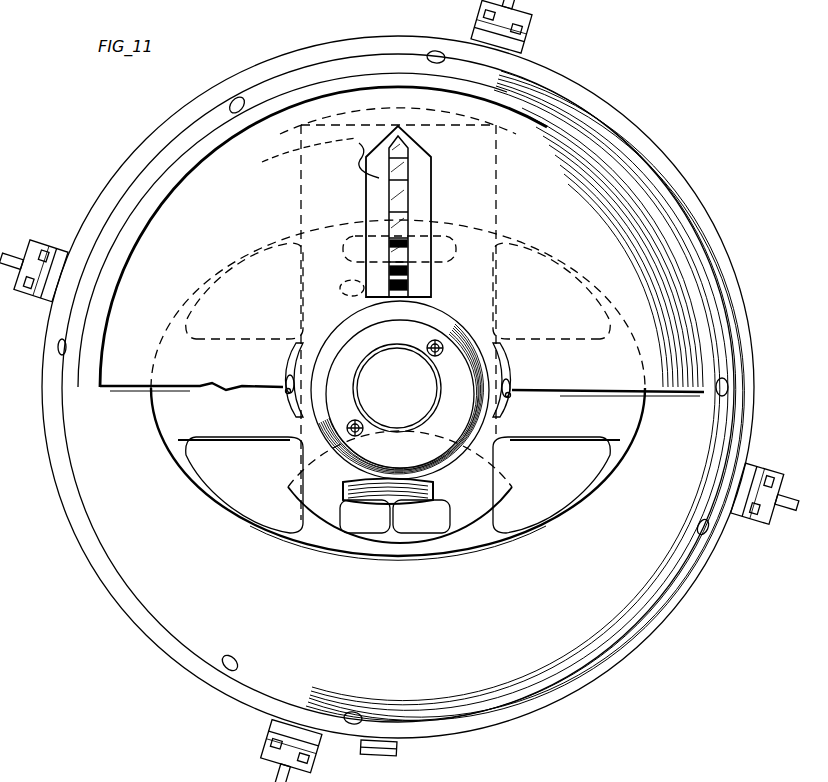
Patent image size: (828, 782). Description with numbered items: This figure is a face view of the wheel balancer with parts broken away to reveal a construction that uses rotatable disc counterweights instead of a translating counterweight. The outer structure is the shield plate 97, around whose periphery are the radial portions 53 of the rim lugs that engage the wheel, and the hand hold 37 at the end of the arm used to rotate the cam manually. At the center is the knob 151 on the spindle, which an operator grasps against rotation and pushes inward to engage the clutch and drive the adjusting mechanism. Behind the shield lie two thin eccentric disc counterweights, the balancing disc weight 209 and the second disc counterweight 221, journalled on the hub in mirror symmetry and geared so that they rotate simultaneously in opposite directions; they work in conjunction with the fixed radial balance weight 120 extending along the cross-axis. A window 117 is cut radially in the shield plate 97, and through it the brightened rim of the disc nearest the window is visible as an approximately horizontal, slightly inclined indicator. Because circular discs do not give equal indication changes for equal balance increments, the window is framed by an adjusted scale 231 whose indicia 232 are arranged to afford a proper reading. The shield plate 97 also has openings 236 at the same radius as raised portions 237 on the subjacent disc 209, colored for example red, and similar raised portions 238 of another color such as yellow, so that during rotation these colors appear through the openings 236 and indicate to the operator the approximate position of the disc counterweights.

The shield plate 97 is at (167, 283).
The window 117 is at (412, 191).
The fixed radial balance weight 120 is at (503, 226).
The knob 151 is at (412, 385).
The balancing disc weight 209 is at (213, 496).
The disc counterweight 221 is at (526, 543).
The scale 231 is at (421, 218).
The indicia 232 is at (320, 156).
The openings 236 is at (284, 356).
The raised portions 237 is at (357, 296).
The raised portions 238 is at (288, 402).
The radial portion 53 is at (272, 730).
The hand hold 37 is at (380, 752).